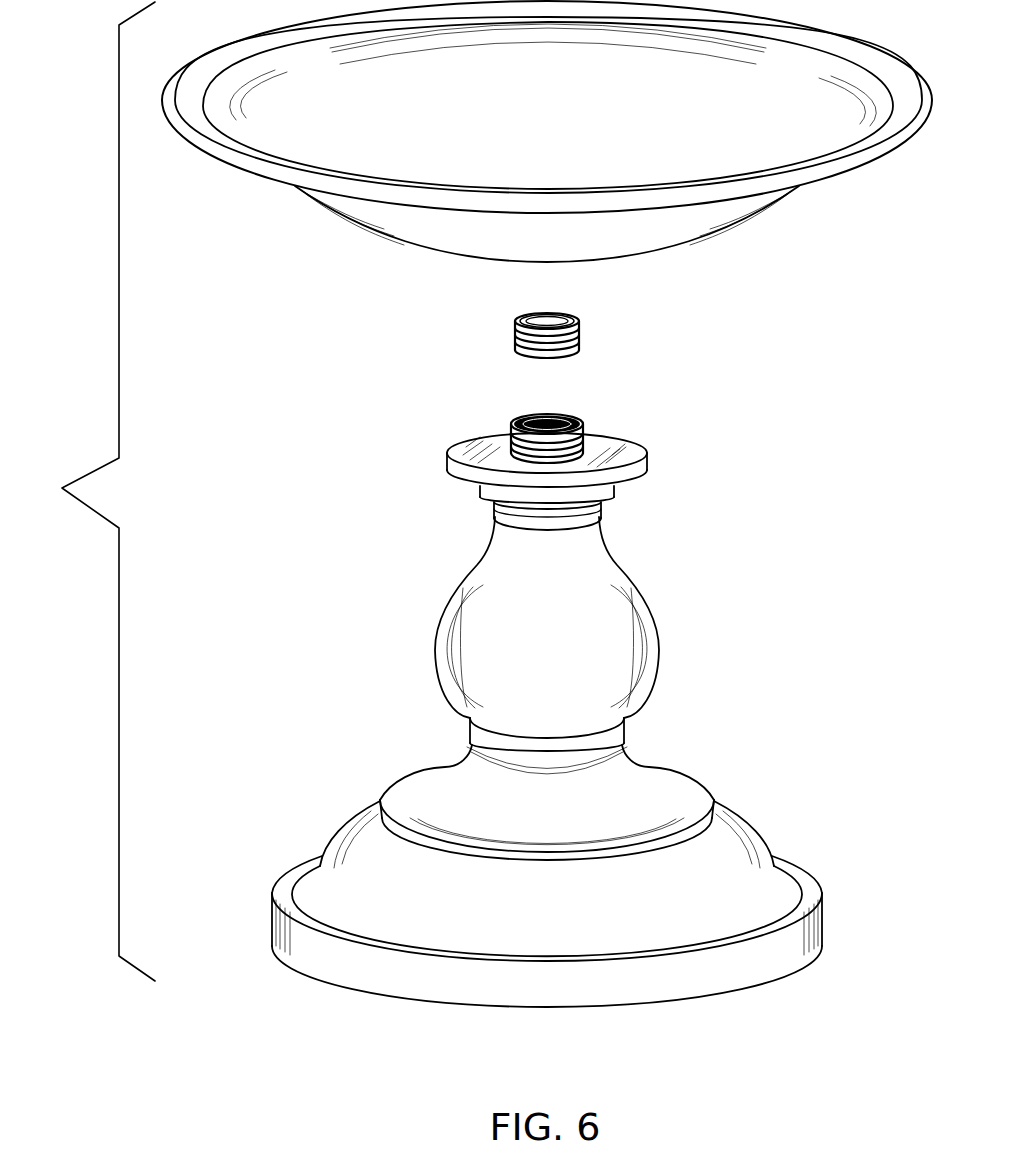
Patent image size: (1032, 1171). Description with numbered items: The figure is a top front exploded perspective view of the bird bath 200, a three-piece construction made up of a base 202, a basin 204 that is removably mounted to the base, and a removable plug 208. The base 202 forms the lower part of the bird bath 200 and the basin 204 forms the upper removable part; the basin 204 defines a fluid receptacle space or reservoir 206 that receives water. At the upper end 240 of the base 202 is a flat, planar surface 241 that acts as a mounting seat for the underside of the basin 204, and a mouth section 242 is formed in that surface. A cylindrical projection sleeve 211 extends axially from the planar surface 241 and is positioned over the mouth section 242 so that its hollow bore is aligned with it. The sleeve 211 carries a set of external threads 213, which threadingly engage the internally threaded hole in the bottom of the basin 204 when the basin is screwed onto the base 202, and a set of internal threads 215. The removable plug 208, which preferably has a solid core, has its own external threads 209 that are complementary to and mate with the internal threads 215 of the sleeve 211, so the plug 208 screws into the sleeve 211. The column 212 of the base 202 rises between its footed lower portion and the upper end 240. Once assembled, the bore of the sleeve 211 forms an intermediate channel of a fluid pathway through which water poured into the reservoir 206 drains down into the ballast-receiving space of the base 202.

The bird bath 200 is at (85, 491).
The base 202 is at (758, 776).
The basin 204 is at (797, 216).
The reservoir 206 is at (570, 99).
The removable plug 208 is at (496, 321).
The external threads 209 is at (581, 343).
The projection sleeve 211 is at (601, 430).
The column 212 is at (426, 600).
The external threads 213 is at (513, 454).
The internal threads 215 is at (545, 413).
The upper end 240 is at (447, 500).
The planar surface 241 is at (632, 448).
The mouth section 242 is at (519, 411).